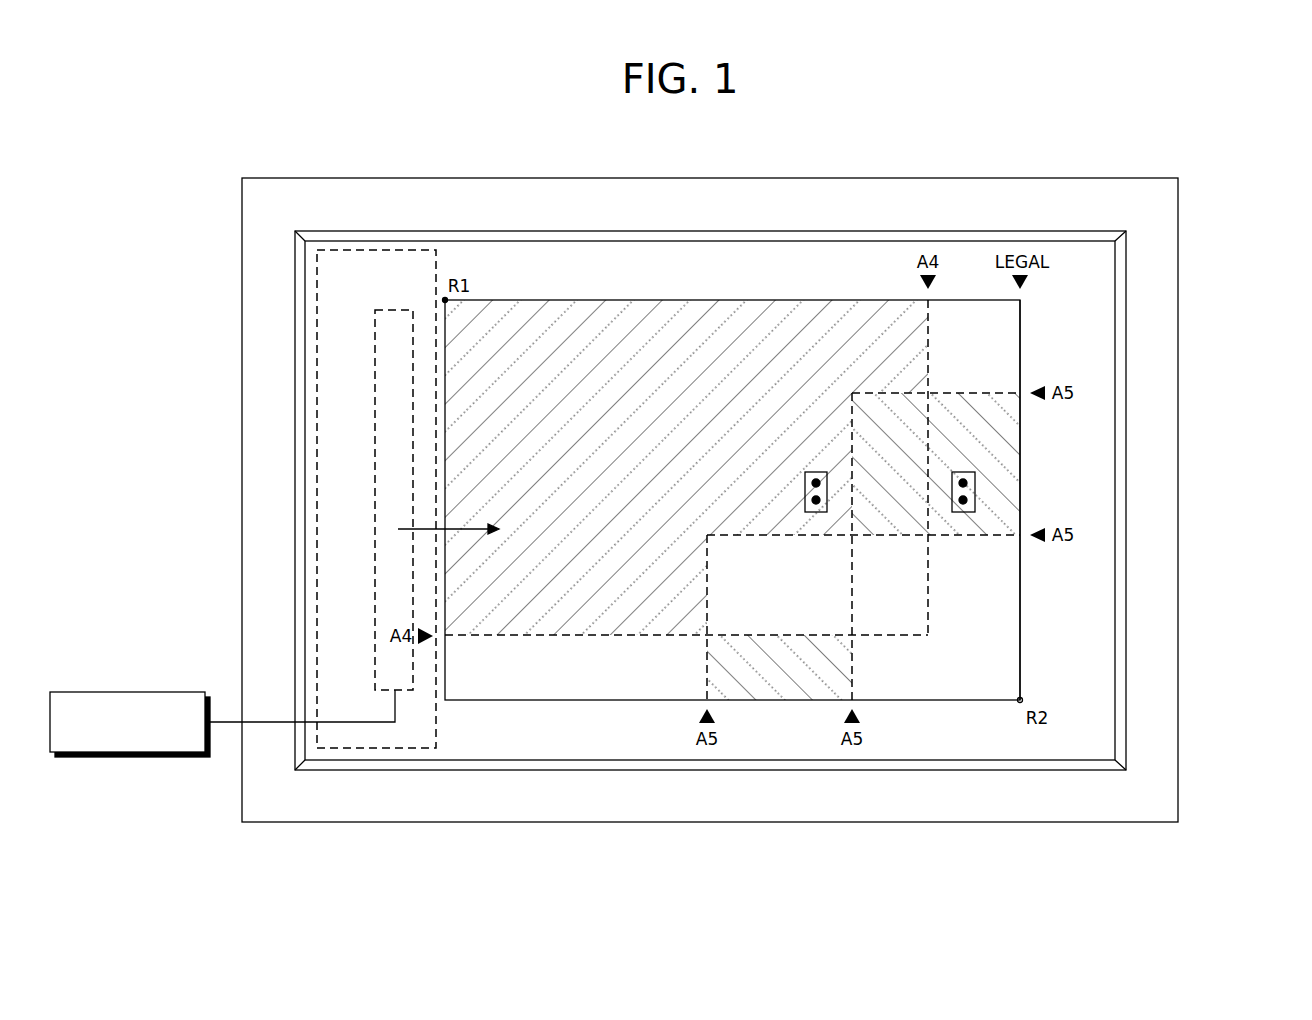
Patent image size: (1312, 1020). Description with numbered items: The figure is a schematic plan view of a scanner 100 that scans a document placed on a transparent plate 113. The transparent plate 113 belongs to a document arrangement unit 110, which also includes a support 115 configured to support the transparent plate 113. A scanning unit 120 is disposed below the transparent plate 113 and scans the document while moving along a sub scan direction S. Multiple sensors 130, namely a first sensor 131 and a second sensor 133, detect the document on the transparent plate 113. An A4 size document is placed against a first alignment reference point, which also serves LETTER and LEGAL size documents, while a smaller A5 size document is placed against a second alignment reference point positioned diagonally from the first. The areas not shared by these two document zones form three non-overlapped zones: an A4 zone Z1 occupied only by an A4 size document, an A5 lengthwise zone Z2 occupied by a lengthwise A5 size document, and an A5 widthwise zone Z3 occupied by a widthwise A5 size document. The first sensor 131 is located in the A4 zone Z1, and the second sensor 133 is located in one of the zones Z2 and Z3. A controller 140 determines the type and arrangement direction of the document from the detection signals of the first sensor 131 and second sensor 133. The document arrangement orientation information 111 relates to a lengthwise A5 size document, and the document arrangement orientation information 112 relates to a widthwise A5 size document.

The scanner 100 is at (1197, 175).
The document arrangement unit 110 is at (1265, 625).
The document arrangement orientation information 111 is at (1097, 395).
The document arrangement orientation information 112 is at (1097, 535).
The transparent plate 113 is at (975, 624).
The support 115 is at (1085, 710).
The scanning unit 120 is at (400, 320).
The multiple sensors 130 is at (884, 303).
The first sensor 131 is at (812, 472).
The second sensor 133 is at (962, 472).
The controller 140 is at (128, 690).
The A4 zone Z1 is at (615, 319).
The A5 lengthwise zone Z2 is at (997, 450).
The A5 widthwise zone Z3 is at (785, 666).
The sub scan direction S is at (470, 530).